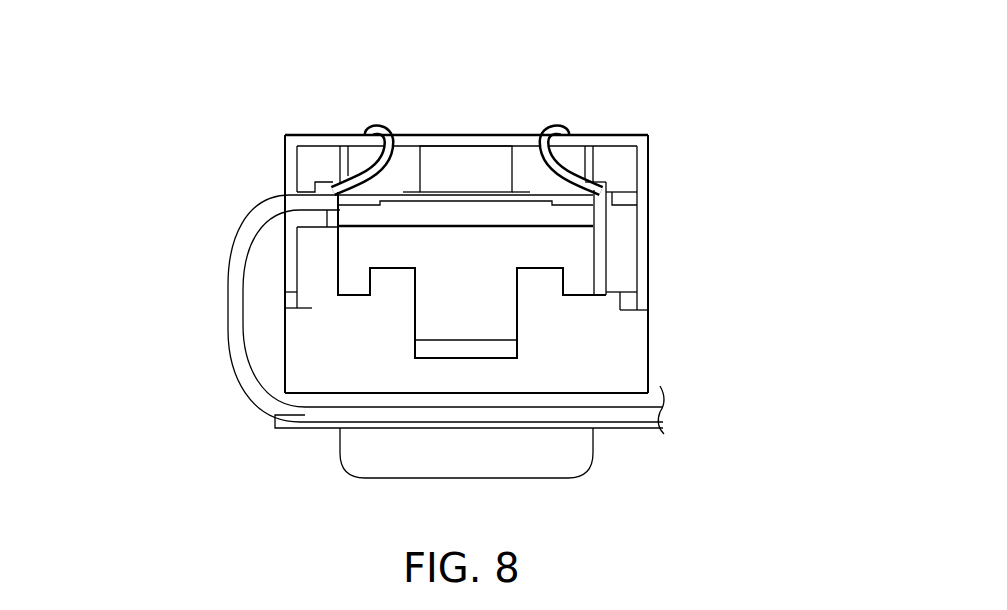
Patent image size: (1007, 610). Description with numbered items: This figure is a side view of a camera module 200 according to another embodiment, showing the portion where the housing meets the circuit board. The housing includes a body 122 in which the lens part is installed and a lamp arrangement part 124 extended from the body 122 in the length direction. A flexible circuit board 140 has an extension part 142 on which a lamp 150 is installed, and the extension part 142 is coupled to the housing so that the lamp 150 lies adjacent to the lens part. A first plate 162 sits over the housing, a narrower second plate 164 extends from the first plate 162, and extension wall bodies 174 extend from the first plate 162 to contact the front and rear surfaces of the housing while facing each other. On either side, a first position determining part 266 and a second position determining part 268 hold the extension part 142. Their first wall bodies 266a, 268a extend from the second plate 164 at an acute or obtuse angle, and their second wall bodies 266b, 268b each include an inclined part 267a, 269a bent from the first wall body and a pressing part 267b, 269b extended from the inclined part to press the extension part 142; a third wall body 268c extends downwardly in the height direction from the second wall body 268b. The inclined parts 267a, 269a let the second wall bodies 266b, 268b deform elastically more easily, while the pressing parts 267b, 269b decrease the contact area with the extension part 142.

The camera module 200 is at (492, 50).
The first position determining part 266 is at (110, 85).
The first wall body 266a is at (363, 138).
The second wall body 266b is at (190, 112).
The inclined part 267a is at (357, 173).
The pressing part 267b is at (325, 182).
The extension wall body 174 is at (288, 187).
The second plate 164 is at (378, 135).
The lamp 150 is at (463, 160).
The first plate 162 is at (593, 137).
The first wall body 268a is at (568, 147).
The second wall body 268b is at (740, 180).
The third wall body 268c is at (600, 238).
The inclined part 269a is at (600, 172).
The pressing part 269b is at (612, 193).
The second position determining part 268 is at (835, 158).
The body 122 is at (622, 288).
The lamp arrangement part 124 is at (500, 312).
The extension part 142 is at (463, 200).
The flexible circuit board 140 is at (568, 414).